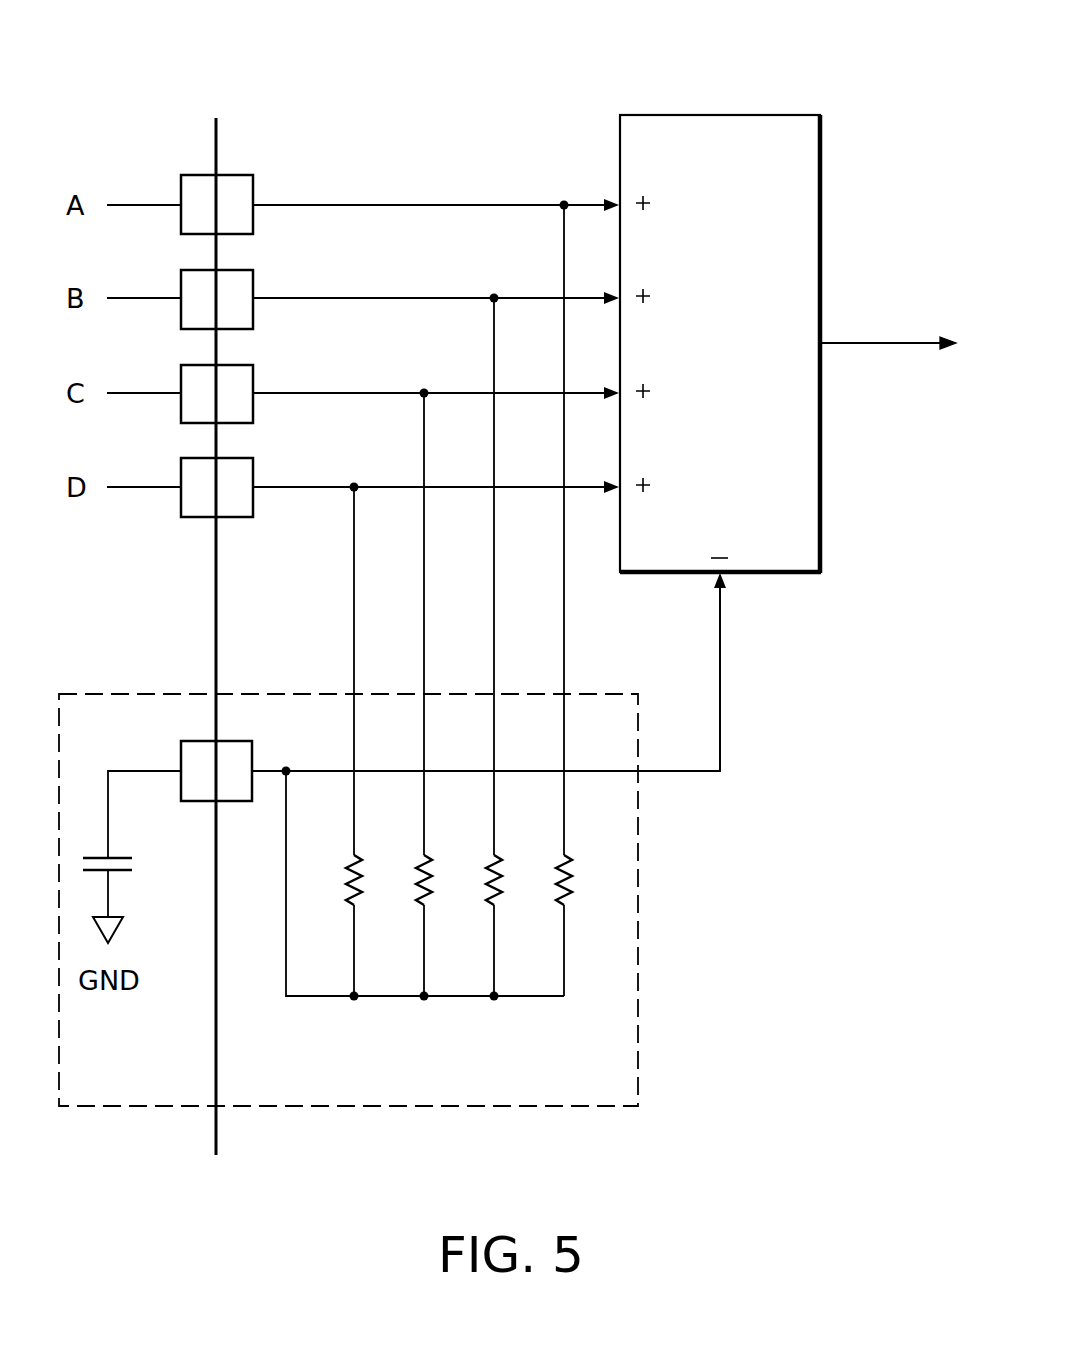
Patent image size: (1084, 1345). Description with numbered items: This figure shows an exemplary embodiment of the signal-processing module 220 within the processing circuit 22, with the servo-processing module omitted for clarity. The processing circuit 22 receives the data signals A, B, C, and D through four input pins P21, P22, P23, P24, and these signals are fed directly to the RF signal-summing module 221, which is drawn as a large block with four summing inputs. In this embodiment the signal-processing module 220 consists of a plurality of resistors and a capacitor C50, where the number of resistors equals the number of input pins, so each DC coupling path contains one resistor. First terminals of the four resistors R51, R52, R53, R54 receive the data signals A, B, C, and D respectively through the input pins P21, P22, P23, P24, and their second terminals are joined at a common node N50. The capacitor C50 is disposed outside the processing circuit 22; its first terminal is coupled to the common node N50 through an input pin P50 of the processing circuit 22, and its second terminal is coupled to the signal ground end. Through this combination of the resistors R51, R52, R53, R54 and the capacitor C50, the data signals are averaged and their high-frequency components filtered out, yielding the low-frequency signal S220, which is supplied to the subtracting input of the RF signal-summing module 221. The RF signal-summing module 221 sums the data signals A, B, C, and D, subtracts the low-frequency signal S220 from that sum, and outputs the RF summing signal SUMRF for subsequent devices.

The processing circuit 22 is at (504, 52).
The RF signal-summing module 221 is at (624, 114).
The signal-processing module 220 is at (84, 694).
The input pin P21 is at (217, 204).
The input pin P22 is at (217, 299).
The input pin P23 is at (217, 394).
The input pin P24 is at (217, 487).
The input pin P50 is at (216, 771).
The capacitor C50 is at (118, 857).
The resistor R51 is at (345, 880).
The resistor R52 is at (415, 880).
The resistor R53 is at (485, 880).
The resistor R54 is at (555, 880).
The common node N50 is at (354, 999).
The low-frequency signal S220 is at (763, 678).
The RF summing signal SUMRF is at (888, 329).